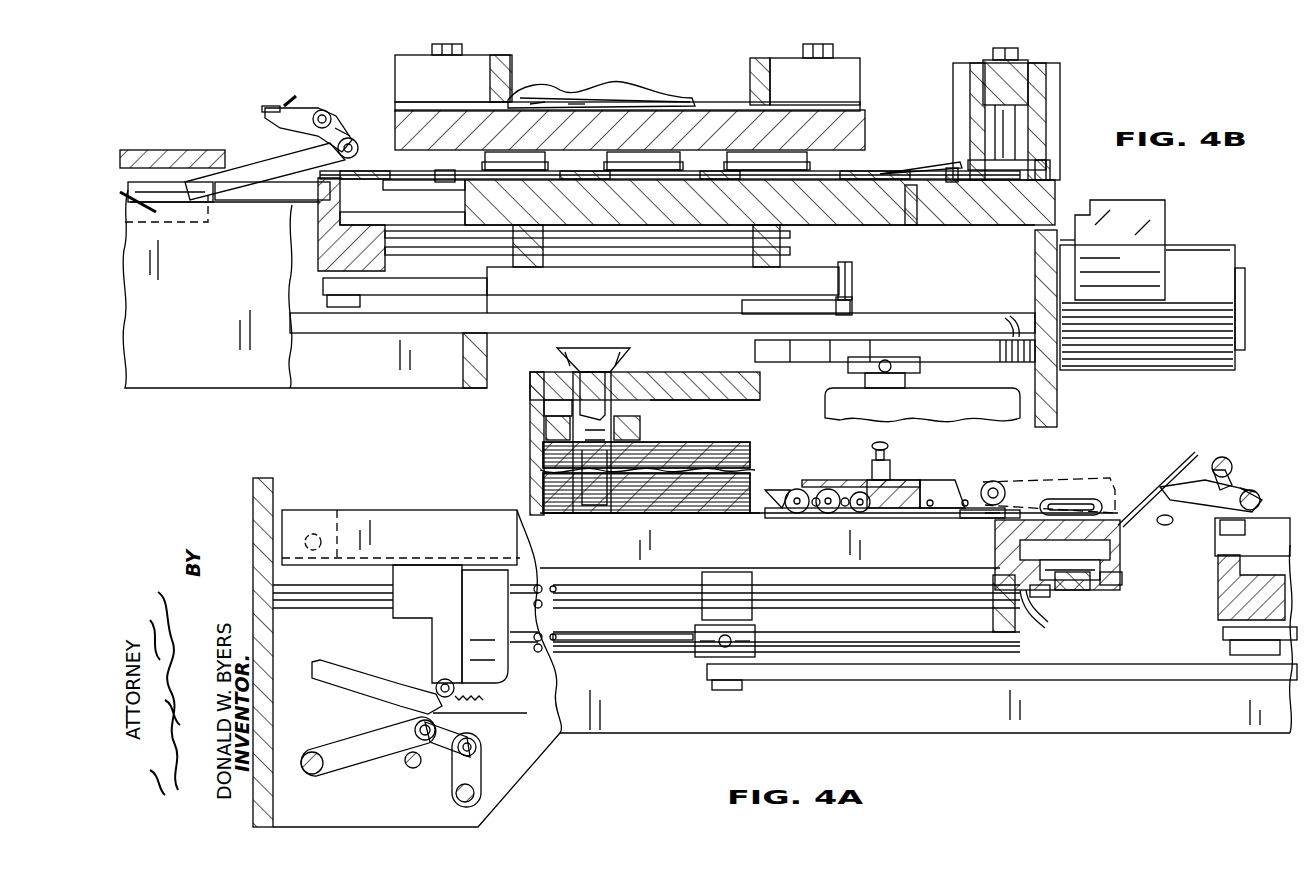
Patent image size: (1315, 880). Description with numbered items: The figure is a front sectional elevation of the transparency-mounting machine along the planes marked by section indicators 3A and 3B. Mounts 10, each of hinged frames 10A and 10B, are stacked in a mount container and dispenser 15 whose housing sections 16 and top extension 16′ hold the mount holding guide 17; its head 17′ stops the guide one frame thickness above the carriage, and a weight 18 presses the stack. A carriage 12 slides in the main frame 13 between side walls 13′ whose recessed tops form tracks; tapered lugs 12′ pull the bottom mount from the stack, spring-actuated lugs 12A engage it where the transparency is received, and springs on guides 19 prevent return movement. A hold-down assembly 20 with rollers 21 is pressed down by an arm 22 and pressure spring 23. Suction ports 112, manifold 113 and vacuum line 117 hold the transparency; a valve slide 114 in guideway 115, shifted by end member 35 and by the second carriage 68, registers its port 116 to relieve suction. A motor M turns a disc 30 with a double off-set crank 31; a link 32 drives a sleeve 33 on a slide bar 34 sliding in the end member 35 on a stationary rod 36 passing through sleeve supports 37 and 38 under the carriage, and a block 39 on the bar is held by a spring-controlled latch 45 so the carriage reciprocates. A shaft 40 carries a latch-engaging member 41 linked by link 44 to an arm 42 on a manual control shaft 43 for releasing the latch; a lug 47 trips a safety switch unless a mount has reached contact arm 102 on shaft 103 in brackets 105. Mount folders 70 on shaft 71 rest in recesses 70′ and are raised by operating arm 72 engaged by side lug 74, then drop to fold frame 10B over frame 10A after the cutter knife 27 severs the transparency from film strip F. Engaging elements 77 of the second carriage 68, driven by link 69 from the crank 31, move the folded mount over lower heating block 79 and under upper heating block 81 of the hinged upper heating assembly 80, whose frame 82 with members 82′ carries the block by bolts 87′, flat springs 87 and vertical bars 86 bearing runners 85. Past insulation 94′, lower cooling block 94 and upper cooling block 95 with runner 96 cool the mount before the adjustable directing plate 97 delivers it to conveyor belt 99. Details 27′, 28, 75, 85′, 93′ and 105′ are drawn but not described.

In FIG. 4B, the mount 10 is at (1063, 177).
In FIG. 4A, the mount 10 is at (748, 443).
In FIG. 4A, the frame 10A is at (545, 486).
In FIG. 4B, the frame 10B is at (302, 105).
In FIG. 4A, the frame 10B is at (752, 460).
In FIG. 4B, the carriage 12 is at (196, 226).
In FIG. 4A, the carriage 12 is at (641, 621).
In FIG. 4A, the tapered lugs 12′ is at (608, 513).
In FIG. 4A, the spring-actuated lugs 12A is at (985, 498).
In FIG. 4B, the main frame 13 is at (1057, 396).
In FIG. 4A, the main frame 13 is at (255, 500).
In FIG. 4B, the side walls 13′ is at (542, 289).
In FIG. 4A, the side walls 13′ is at (783, 686).
In FIG. 4A, the mount container and dispenser 15 is at (527, 418).
In FIG. 4A, the upright housing sections 16 is at (531, 440).
In FIG. 4A, the top extension 16′ is at (720, 402).
In FIG. 4A, the mount holding guide 17 is at (592, 442).
In FIG. 4A, the head 17′ is at (593, 357).
In FIG. 4A, the weight 18 is at (640, 428).
In FIG. 4A, the guides 19 is at (778, 490).
In FIG. 4A, the hold-down assembly 20 is at (944, 491).
In FIG. 4A, the rollers 21 is at (802, 490).
In FIG. 4A, the arm 22 is at (893, 470).
In FIG. 4A, the pressure spring 23 is at (889, 451).
In FIG. 4B, the cutter knife 27 is at (135, 140).
In FIG. 4A, the cutter knife 27 is at (1050, 490).
In FIG. 4A, the slot 27′ is at (1082, 496).
In FIG. 4A, the pivot 28 is at (995, 482).
In FIG. 4B, the disc 30 is at (920, 345).
In FIG. 4B, the double off-set crank 31 is at (810, 316).
In FIG. 4B, the link 32 is at (612, 320).
In FIG. 4A, the link 32 is at (1165, 683).
In FIG. 4A, the sleeve 33 is at (700, 660).
In FIG. 4A, the slide bar 34 is at (665, 656).
In FIG. 4A, the end member 35 is at (995, 617).
In FIG. 4A, the stationary rod 36 is at (848, 599).
In FIG. 4A, the sleeve support member 37 is at (727, 595).
In FIG. 4A, the sleeve support member 38 is at (427, 624).
In FIG. 4A, the block 39 is at (485, 626).
In FIG. 4A, the shaft 40 is at (315, 773).
In FIG. 4A, the latch-engaging member 41 is at (368, 746).
In FIG. 4A, the arm 42 is at (482, 765).
In FIG. 4A, the control shaft 43 is at (478, 800).
In FIG. 4A, the link 44 is at (450, 722).
In FIG. 4A, the latch 45 is at (560, 734).
In FIG. 4A, the lug 47 is at (320, 534).
In FIG. 4B, the second carriage 68 is at (391, 224).
In FIG. 4A, the second carriage 68 is at (1222, 586).
In FIG. 4B, the link 69 is at (852, 286).
In FIG. 4A, the link 69 is at (1228, 635).
In FIG. 4B, the mount folders 70 is at (282, 134).
In FIG. 4A, the mount folders 70 is at (1180, 496).
In FIG. 4A, the recesses 70′ is at (1166, 527).
In FIG. 4B, the shaft 71 is at (352, 140).
In FIG. 4A, the shaft 71 is at (1258, 500).
In FIG. 4B, the operating arm 72 is at (310, 165).
In FIG. 4B, the side lug 74 is at (210, 189).
In FIG. 4B, the pin 75 is at (146, 210).
In FIG. 4B, the engaging elements 77 is at (952, 176).
In FIG. 4A, the engaging elements 77 is at (1222, 530).
In FIG. 4B, the lower heating block 79 is at (872, 226).
In FIG. 4B, the upper heating assembly 80 is at (868, 72).
In FIG. 4B, the upper heating block 81 is at (866, 116).
In FIG. 4B, the frame 82 is at (986, 60).
In FIG. 4B, the members 82′ is at (500, 58).
In FIG. 4B, the spring-mounted runners 85 is at (642, 160).
In FIG. 4B, the heating element 85′ is at (416, 176).
In FIG. 4B, the vertical bars 86 is at (536, 106).
In FIG. 4B, the flat spring 87 is at (575, 106).
In FIG. 4B, the bolts 87′ is at (436, 47).
In FIG. 4B, the spring 93′ is at (998, 323).
In FIG. 4B, the lower cooling block 94 is at (1052, 198).
In FIG. 4B, the insulation 94′ is at (910, 228).
In FIG. 4B, the upper cooling block 95 is at (1050, 119).
In FIG. 4B, the spring-mounted runner 96 is at (920, 170).
In FIG. 4B, the adjustable directing plate 97 is at (1112, 250).
In FIG. 4B, the conveyor belt 99 is at (1152, 307).
In FIG. 4A, the contact arm 102 is at (1215, 488).
In FIG. 4B, the shaft 103 is at (325, 110).
In FIG. 4A, the shaft 103 is at (1228, 462).
In FIG. 4B, the brackets 105 is at (348, 132).
In FIG. 4A, the brackets 105 is at (1250, 491).
In FIG. 4B, the pin 105′ is at (275, 106).
In FIG. 4A, the air suction ports 112 is at (1100, 534).
In FIG. 4A, the manifold 113 is at (1098, 553).
In FIG. 4A, the valve slide 114 is at (1098, 590).
In FIG. 4A, the guideway 115 is at (1078, 593).
In FIG. 4A, the port 116 is at (1118, 582).
In FIG. 4A, the vacuum line 117 is at (1047, 619).
In FIG. 4B, the film F is at (790, 172).
In FIG. 4B, the motor M is at (922, 389).
In FIG. 4A, the section line 3A is at (305, 425).
In FIG. 4B, the section line 3B is at (320, 33).